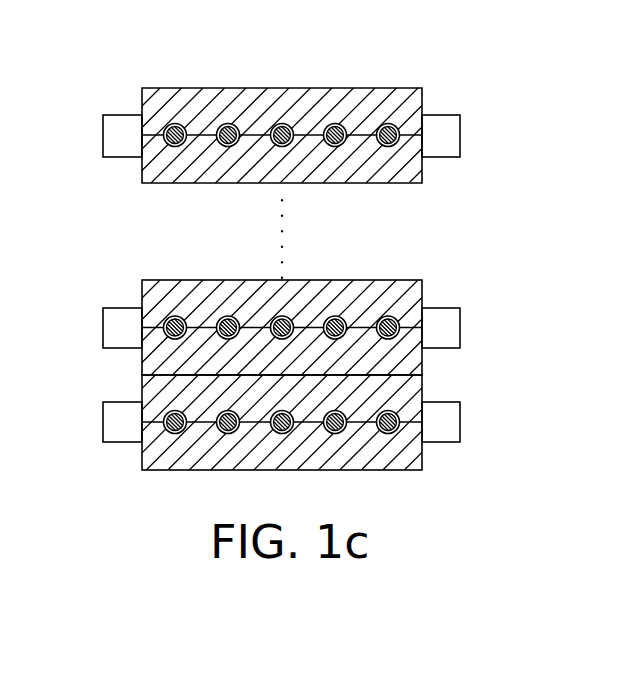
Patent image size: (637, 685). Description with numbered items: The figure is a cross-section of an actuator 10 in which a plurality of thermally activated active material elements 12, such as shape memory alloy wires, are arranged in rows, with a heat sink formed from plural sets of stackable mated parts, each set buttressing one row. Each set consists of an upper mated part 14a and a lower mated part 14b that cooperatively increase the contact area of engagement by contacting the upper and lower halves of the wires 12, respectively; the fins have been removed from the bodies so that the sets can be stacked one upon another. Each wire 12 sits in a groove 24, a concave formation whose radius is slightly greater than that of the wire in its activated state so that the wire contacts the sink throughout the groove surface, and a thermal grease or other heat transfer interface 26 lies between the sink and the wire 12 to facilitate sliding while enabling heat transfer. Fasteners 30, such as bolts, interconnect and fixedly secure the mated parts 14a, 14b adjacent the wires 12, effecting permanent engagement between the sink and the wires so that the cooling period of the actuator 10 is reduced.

The actuator 10 is at (69, 89).
The active material element 12 is at (283, 123).
The upper mated part 14a is at (411, 90).
The lower mated part 14b is at (399, 184).
The groove 24 is at (172, 123).
The heat transfer interface 26 is at (229, 123).
The fastener 30 is at (462, 131).